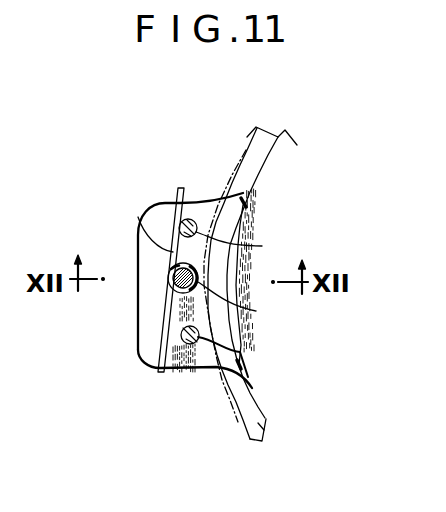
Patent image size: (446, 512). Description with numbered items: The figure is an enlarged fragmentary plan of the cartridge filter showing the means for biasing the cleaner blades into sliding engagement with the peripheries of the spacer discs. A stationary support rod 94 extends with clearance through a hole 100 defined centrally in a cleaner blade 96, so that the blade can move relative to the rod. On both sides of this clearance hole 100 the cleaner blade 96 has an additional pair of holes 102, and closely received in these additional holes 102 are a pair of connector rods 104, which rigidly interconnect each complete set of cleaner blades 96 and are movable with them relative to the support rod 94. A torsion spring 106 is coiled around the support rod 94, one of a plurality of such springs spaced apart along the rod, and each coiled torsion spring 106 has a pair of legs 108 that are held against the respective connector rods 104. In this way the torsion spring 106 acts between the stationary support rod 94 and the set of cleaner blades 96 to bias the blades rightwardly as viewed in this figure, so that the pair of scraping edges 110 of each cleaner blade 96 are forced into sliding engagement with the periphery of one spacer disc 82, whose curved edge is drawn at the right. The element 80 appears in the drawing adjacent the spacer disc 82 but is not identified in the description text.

The web strip 80 is at (246, 151).
The spacer disc 82 is at (298, 422).
The stationary support rod 94 is at (138, 217).
The cleaner blade 96 is at (138, 348).
The hole 100 is at (235, 303).
The additional holes 102 is at (240, 352).
The connector rods 104 is at (188, 219).
The torsion spring 106 is at (168, 270).
The legs 108 is at (175, 194).
The scraping edges 110 is at (245, 200).